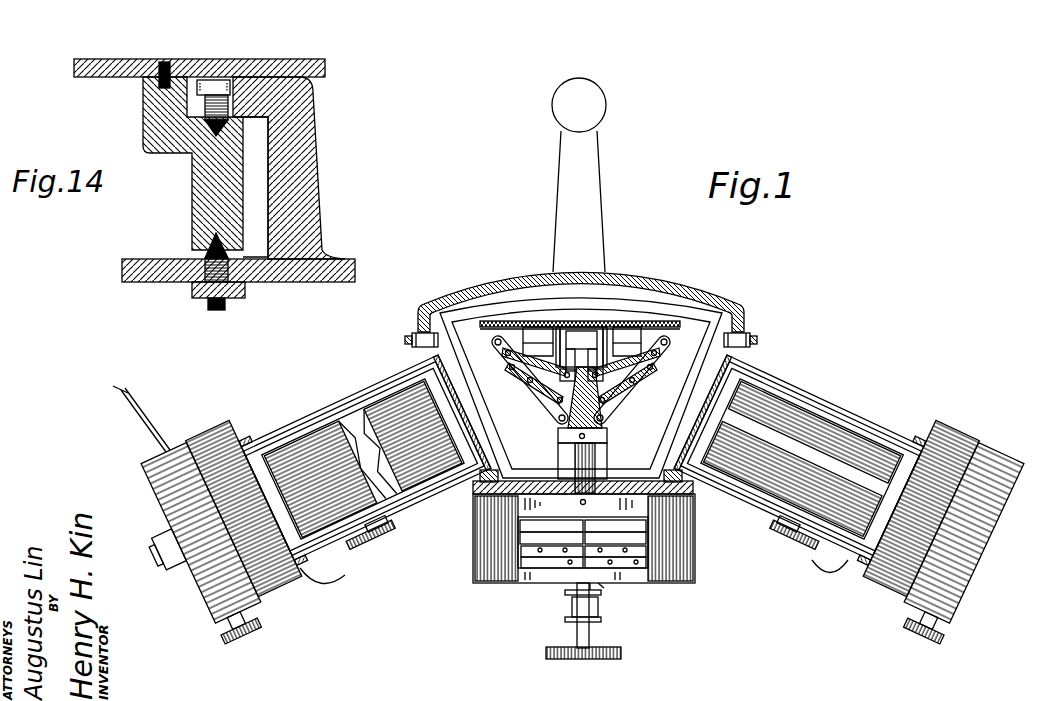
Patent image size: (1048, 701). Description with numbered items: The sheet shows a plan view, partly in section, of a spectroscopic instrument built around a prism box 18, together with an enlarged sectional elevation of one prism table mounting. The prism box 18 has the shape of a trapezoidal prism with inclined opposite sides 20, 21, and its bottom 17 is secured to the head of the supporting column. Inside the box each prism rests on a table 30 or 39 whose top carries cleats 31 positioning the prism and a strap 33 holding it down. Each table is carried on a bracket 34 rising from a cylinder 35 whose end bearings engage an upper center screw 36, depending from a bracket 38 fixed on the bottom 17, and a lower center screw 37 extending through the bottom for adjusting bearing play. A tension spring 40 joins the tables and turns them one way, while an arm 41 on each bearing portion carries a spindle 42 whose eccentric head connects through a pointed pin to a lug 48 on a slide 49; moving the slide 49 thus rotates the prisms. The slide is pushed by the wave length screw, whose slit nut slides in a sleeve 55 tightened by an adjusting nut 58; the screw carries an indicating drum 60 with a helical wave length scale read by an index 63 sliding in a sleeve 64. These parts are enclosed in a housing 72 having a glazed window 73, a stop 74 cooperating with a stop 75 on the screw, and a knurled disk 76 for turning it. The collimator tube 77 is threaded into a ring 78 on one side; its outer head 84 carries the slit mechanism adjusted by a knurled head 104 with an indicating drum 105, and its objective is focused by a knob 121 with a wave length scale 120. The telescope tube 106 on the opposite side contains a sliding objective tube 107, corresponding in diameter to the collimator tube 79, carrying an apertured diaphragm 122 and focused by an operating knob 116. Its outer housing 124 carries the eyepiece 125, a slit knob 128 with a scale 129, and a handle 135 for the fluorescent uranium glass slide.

In FIG. 14, the bottom 17 is at (317, 279).
In FIG. 1, the prism box 18 is at (657, 280).
In FIG. 1, the inclined side 20 is at (746, 322).
In FIG. 1, the inclined side 21 is at (410, 325).
In FIG. 1, the table 30 is at (545, 428).
In FIG. 1, the cleats 31 is at (530, 408).
In FIG. 1, the strap 33 is at (515, 382).
In FIG. 14, the bracket 34 is at (143, 128).
In FIG. 14, the cylinder 35 is at (243, 176).
In FIG. 14, the upper center screw 36 is at (213, 99).
In FIG. 14, the lower center screw 37 is at (213, 302).
In FIG. 14, the bracket 38 is at (313, 104).
In FIG. 1, the bracket 38 is at (630, 330).
In FIG. 14, the table 39 is at (258, 59).
In FIG. 1, the table 39 is at (617, 428).
In FIG. 1, the tension spring 40 is at (526, 322).
In FIG. 1, the arm 41 is at (552, 360).
In FIG. 1, the spindle 42 is at (580, 349).
In FIG. 1, the lug 48 is at (585, 397).
In FIG. 1, the slide 49 is at (584, 322).
In FIG. 1, the sleeve 55 is at (562, 482).
In FIG. 1, the adjusting nut 58 is at (558, 452).
In FIG. 1, the indicating drum 60 is at (600, 586).
In FIG. 1, the index 63 is at (597, 505).
In FIG. 1, the sleeve 64 is at (600, 466).
In FIG. 1, the housing 72 is at (693, 553).
In FIG. 1, the glazed window 73 is at (532, 583).
In FIG. 1, the stop 74 is at (606, 590).
In FIG. 1, the stop 75 is at (598, 590).
In FIG. 1, the knurled disk 76 is at (600, 660).
In FIG. 1, the collimator tube 77 is at (847, 404).
In FIG. 1, the ring 78 is at (752, 342).
In FIG. 1, the collimator tube 79 is at (787, 383).
In FIG. 1, the head 84 is at (950, 447).
In FIG. 1, the knurled operating head 104 is at (936, 648).
In FIG. 1, the indicating drum 105 is at (907, 620).
In FIG. 1, the telescope tube 106 is at (315, 394).
In FIG. 1, the objective tube 107 is at (375, 384).
In FIG. 1, the operating knob 116 is at (375, 550).
In FIG. 1, the wave length scale 120 is at (782, 537).
In FIG. 1, the knob 121 is at (802, 565).
In FIG. 1, the apertured diaphragm 122 is at (310, 572).
In FIG. 1, the housing 124 is at (153, 493).
In FIG. 1, the eyepiece 125 is at (160, 563).
In FIG. 1, the knob 128 is at (275, 640).
In FIG. 1, the scale 129 is at (252, 620).
In FIG. 1, the handle 135 is at (142, 417).